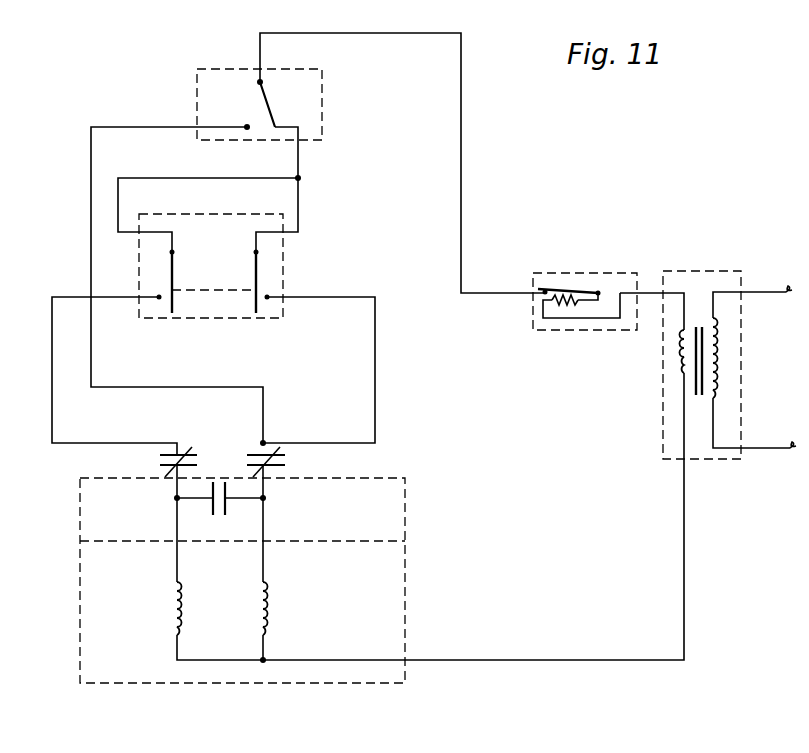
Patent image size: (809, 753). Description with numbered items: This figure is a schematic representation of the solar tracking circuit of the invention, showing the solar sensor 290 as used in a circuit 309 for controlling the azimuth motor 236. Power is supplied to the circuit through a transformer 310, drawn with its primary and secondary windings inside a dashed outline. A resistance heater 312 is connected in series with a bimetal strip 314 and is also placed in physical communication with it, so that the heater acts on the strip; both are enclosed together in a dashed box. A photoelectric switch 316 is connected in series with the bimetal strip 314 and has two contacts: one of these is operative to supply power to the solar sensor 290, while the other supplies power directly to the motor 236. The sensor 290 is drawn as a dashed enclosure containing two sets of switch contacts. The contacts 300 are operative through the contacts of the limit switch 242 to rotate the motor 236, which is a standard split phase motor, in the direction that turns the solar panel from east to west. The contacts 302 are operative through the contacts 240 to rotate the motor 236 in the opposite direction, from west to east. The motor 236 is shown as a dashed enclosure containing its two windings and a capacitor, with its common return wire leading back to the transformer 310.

The azimuth motor 236 is at (82, 612).
The contacts 240 is at (290, 462).
The limit switch 242 is at (157, 458).
The solar sensor 290 is at (285, 267).
The contacts 300 is at (168, 303).
The contacts 302 is at (260, 303).
The circuit 309 is at (548, 210).
The transformer 310 is at (742, 238).
The resistance heater 312 is at (573, 305).
The bimetal strip 314 is at (572, 287).
The photoelectric switch 316 is at (323, 98).